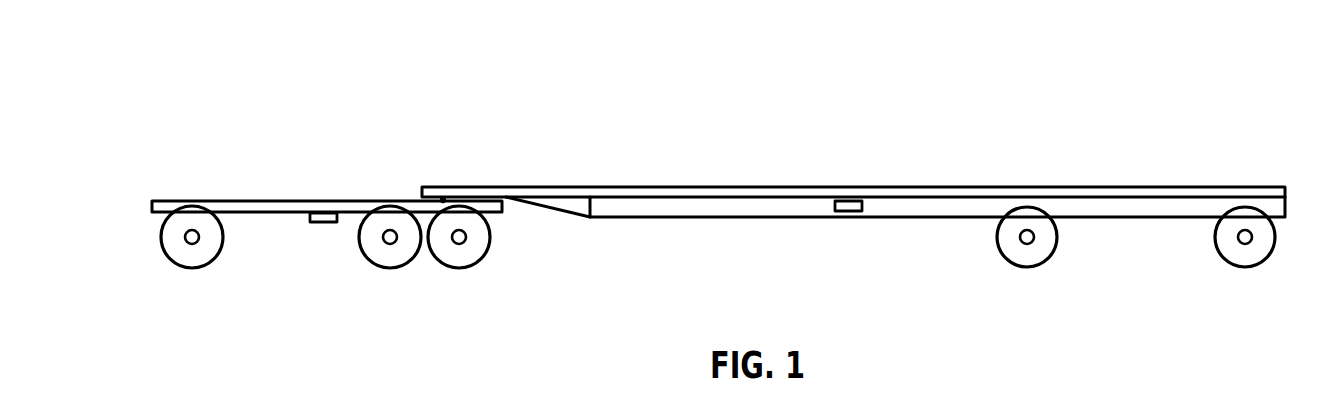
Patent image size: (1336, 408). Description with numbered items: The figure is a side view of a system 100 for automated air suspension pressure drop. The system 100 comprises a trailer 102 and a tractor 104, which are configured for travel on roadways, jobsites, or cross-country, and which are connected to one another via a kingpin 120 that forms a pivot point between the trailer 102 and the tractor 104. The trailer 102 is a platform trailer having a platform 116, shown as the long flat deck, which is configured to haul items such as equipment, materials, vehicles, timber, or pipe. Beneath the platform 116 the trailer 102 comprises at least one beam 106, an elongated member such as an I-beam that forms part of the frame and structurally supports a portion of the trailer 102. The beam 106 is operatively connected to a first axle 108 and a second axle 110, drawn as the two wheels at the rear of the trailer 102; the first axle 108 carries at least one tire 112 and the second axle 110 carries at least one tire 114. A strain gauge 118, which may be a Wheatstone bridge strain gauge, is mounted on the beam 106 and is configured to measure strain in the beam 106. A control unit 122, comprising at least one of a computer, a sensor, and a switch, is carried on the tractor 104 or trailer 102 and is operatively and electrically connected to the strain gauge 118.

The system 100 is at (570, 114).
The trailer 102 is at (1170, 145).
The tractor 104 is at (264, 181).
The beam 106 is at (1110, 208).
The first axle 108 is at (1252, 243).
The second axle 110 is at (1020, 245).
The tire 112 is at (1241, 255).
The tire 114 is at (1033, 255).
The platform 116 is at (902, 187).
The strain gauge 118 is at (845, 211).
The kingpin 120 is at (443, 200).
The control unit 122 is at (325, 222).